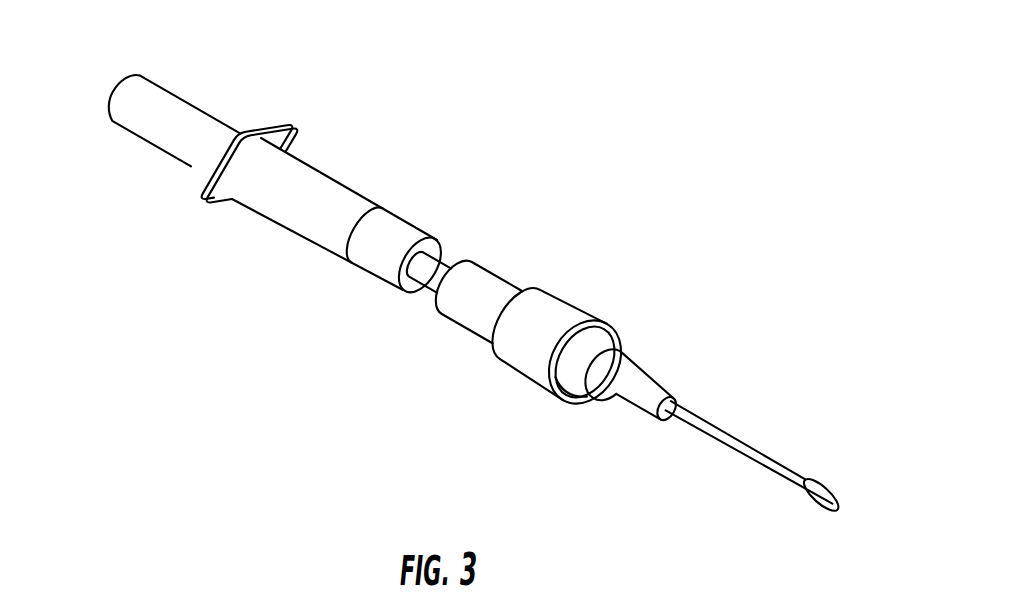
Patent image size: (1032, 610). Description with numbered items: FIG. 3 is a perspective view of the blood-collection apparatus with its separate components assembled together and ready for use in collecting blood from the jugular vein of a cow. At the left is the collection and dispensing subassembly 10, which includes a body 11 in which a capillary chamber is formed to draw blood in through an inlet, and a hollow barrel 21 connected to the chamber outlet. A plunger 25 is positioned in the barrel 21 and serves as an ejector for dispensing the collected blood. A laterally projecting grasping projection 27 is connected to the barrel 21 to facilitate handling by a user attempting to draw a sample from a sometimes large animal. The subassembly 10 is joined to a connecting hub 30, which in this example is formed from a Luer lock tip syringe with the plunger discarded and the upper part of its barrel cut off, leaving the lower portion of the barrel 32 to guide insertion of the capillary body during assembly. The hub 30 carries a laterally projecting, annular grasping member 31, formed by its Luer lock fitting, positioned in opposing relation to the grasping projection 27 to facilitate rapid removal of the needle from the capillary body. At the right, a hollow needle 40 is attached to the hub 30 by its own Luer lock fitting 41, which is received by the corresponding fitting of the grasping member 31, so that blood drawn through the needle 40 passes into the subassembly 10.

The collection and dispensing subassembly 10 is at (293, 208).
The body 11 is at (445, 258).
The hollow barrel 21 is at (353, 184).
The plunger 25 is at (174, 104).
The grasping projection 27 is at (290, 143).
The connecting hub 30 is at (638, 392).
The grasping member 31 is at (606, 321).
The lower portion of the barrel 32 is at (485, 278).
The hollow needle 40 is at (723, 468).
The Luer lock fitting 41 is at (622, 365).